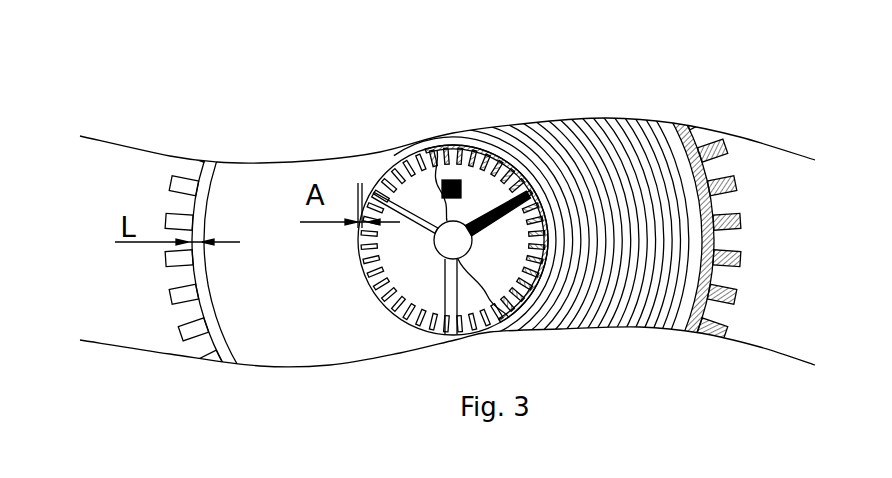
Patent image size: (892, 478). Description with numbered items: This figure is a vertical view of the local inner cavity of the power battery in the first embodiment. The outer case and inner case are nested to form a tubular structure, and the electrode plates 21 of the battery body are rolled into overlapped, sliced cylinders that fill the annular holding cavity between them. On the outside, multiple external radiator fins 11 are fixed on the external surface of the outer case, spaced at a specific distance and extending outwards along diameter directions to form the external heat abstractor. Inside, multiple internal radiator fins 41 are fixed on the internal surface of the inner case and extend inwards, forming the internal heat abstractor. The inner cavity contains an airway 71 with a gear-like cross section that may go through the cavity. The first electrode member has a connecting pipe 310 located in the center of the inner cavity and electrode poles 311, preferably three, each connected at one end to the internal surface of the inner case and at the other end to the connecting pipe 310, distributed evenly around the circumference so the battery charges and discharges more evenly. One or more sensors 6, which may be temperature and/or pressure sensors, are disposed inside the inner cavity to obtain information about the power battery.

The sensor 6 is at (461, 182).
The external radiator fin 11 is at (180, 333).
The electrode plate 21 is at (563, 128).
The internal radiator fin 41 is at (476, 332).
The airway 71 is at (405, 262).
The connecting pipe 310 is at (452, 240).
The electrode pole 311 is at (457, 287).